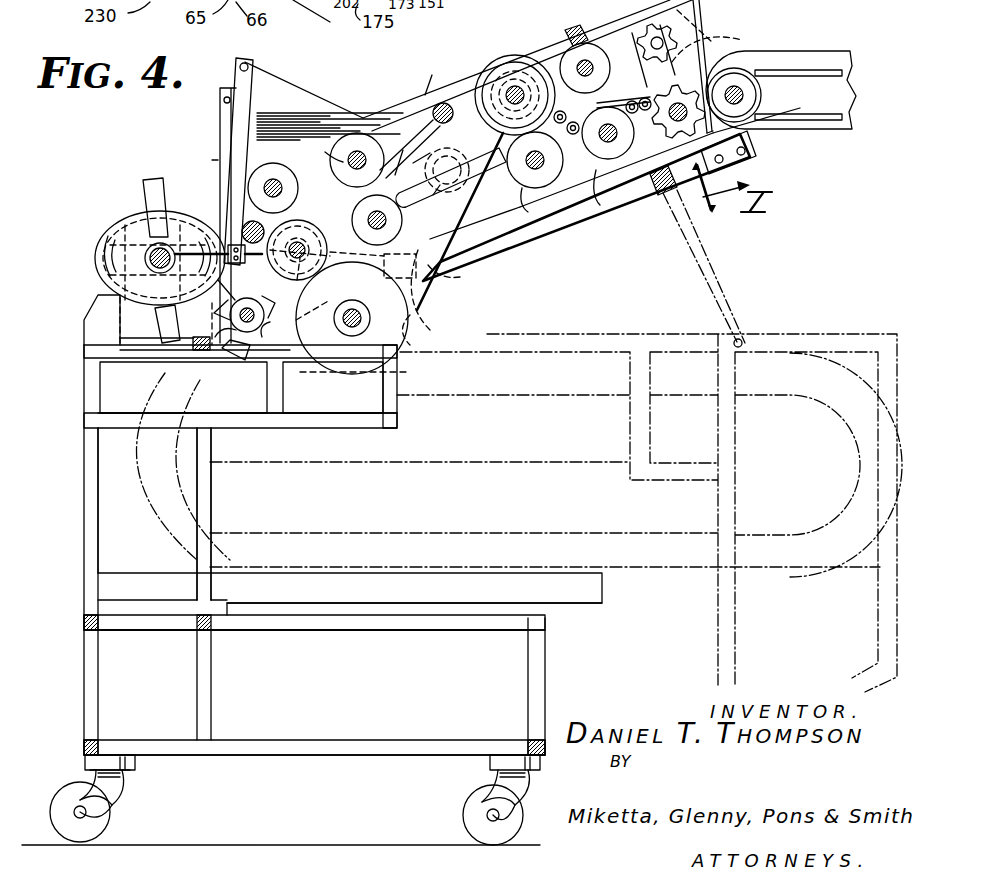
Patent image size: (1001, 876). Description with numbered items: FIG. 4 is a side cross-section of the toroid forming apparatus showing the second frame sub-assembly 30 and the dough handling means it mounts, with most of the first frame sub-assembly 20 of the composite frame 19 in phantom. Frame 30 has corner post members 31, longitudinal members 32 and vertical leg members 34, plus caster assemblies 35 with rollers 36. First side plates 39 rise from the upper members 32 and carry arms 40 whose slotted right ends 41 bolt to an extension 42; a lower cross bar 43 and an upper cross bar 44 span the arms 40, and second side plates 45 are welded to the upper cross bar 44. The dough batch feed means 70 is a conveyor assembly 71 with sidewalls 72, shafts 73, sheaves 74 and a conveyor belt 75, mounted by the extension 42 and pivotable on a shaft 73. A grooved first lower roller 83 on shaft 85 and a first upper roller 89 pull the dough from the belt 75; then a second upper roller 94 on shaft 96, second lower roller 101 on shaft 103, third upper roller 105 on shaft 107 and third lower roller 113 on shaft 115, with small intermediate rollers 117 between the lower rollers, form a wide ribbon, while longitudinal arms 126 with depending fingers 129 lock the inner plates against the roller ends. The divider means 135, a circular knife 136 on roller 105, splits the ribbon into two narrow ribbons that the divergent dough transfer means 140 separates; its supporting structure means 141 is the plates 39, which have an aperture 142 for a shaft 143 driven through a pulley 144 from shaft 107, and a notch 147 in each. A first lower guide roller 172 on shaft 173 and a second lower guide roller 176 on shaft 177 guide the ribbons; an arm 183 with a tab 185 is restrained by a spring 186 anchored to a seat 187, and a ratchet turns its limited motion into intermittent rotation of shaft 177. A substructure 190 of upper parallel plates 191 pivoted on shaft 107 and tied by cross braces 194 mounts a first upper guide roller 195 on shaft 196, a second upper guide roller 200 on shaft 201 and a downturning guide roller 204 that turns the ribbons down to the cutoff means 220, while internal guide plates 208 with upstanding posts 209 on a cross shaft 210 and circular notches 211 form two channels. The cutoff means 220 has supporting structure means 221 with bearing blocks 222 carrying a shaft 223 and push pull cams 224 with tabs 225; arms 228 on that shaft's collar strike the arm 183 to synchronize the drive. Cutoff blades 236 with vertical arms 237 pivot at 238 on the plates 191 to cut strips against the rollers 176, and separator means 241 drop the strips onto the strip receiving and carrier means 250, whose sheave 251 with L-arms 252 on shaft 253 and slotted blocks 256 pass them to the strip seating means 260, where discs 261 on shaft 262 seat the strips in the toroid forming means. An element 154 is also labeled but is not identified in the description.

The composite frame 19 is at (80, 633).
The first frame sub-assembly 20 is at (735, 511).
The second frame sub-assembly 30 is at (213, 490).
The corner post members 31 is at (88, 498).
The longitudinal members 32 is at (233, 425).
The vertical leg members 34 is at (285, 408).
The caster assemblies 35 is at (125, 785).
The rollers 36 is at (98, 830).
The first side plates 39 is at (447, 262).
The arm 40 is at (530, 233).
The slotted right end 41 is at (745, 162).
The extension 42 is at (792, 136).
The lower cross bar 43 is at (687, 195).
The upper cross bar 44 is at (657, 195).
The second side plates 45 is at (568, 195).
The dough batch feed means 70 is at (808, 45).
The conveyor assembly 71 is at (851, 62).
The sidewalls 72 is at (850, 116).
The shafts 73 is at (742, 92).
The sheaves 74 is at (748, 105).
The conveyor belt 75 is at (842, 90).
The first lower roller 83 is at (708, 138).
The shaft 85 is at (708, 74).
The first upper roller 89 is at (688, 40).
The second upper roller 94 is at (586, 50).
The shaft 96 is at (590, 70).
The second lower roller 101 is at (600, 186).
The shaft 103 is at (614, 138).
The third upper roller 105 is at (516, 86).
The shaft 107 is at (512, 62).
The third lower roller 113 is at (537, 188).
The shaft 115 is at (533, 163).
The small intermediate rollers 117 is at (566, 124).
The longitudinal arms 126 is at (620, 30).
The depending fingers 129 is at (740, 42).
The divider means 135 is at (463, 82).
The circular knife 136 is at (515, 55).
The divergent dough transfer means 140 is at (462, 235).
The supporting structure means 141 is at (500, 262).
The aperture 142 is at (452, 158).
The shaft 143 is at (443, 102).
The pulley 144 is at (433, 195).
The notch 147 is at (437, 108).
The link 154 is at (402, 150).
The first lower guide roller 172 is at (386, 222).
The shaft 173 is at (392, 246).
The second lower guide roller 176 is at (305, 250).
The shaft 177 is at (313, 258).
The arm 183 is at (290, 280).
The tab 185 is at (461, 278).
The spring 186 is at (420, 290).
The seat 187 is at (410, 315).
The substructure 190 is at (281, 72).
The upper parallel plates 191 is at (278, 96).
The cross braces 194 is at (432, 75).
The first upper guide roller 195 is at (335, 115).
The shaft 196 is at (355, 132).
The second upper guide roller 200 is at (245, 175).
The shaft 201 is at (275, 190).
The downturning guide roller 204 is at (250, 225).
The internal guide plates 208 is at (356, 225).
The upstanding post 209 is at (345, 160).
The cross shaft 210 is at (321, 147).
The circular notches 211 is at (398, 204).
The strip cutoff means 220 is at (112, 182).
The supporting structure means 221 is at (92, 302).
The bearing blocks 222 is at (100, 265).
The shaft 223 is at (147, 240).
The push pull cams 224 is at (110, 232).
The tabs 225 is at (105, 250).
The arms 228 is at (155, 180).
The cutoff blades 236 is at (235, 264).
The vertical arms 237 is at (225, 115).
The pivot 238 is at (246, 62).
The separator means 241 is at (170, 331).
The strip receiving and carrier means 250 is at (287, 372).
The sheave 251 is at (265, 318).
The L-arms 252 is at (282, 302).
The shaft 253 is at (222, 355).
The slotted blocks 256 is at (168, 358).
The strip seating means 260 is at (412, 338).
The discs 261 is at (398, 362).
The shaft 262 is at (356, 332).